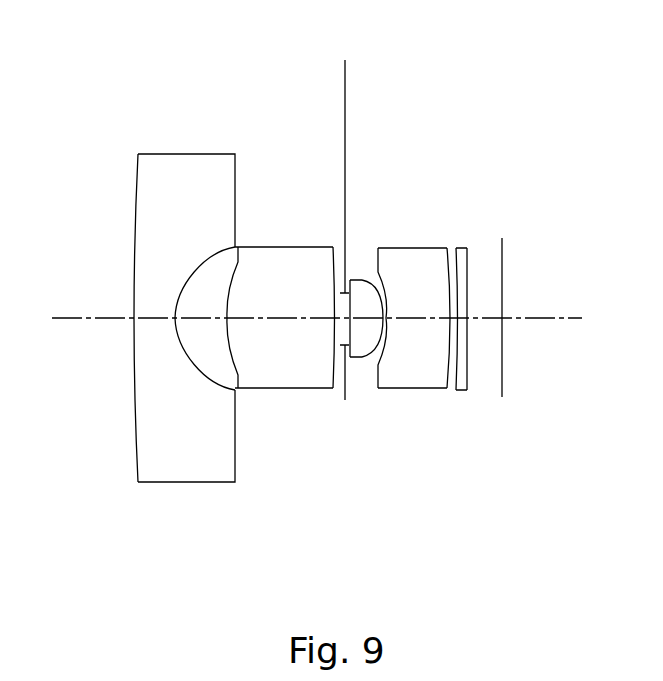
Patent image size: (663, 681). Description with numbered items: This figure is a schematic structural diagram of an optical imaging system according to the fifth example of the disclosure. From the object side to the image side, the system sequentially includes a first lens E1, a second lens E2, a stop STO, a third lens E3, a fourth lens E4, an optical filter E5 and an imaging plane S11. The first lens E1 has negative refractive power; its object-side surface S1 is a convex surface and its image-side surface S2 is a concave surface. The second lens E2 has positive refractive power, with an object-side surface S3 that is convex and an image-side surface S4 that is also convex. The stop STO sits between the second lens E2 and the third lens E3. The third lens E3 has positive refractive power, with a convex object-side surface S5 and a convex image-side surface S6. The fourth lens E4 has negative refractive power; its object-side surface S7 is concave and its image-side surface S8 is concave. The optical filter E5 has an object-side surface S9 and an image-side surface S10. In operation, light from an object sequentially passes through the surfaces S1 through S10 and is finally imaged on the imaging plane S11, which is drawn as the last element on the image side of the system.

The first lens E1 is at (186, 154).
The second lens E2 is at (288, 247).
The stop STO is at (345, 60).
The third lens E3 is at (361, 280).
The fourth lens E4 is at (411, 248).
The optical filter E5 is at (458, 248).
The object-side surface of the first lens S1 is at (133, 318).
The image-side surface of the first lens S2 is at (175, 318).
The object-side surface of the second lens S3 is at (227, 318).
The image-side surface of the second lens S4 is at (333, 318).
The object-side surface of the third lens S5 is at (350, 318).
The image-side surface of the third lens S6 is at (383, 318).
The object-side surface of the fourth lens S7 is at (386, 318).
The image-side surface of the fourth lens S8 is at (451, 318).
The object-side surface of the optical filter S9 is at (457, 318).
The image-side surface of the optical filter S10 is at (467, 318).
The imaging plane S11 is at (502, 318).